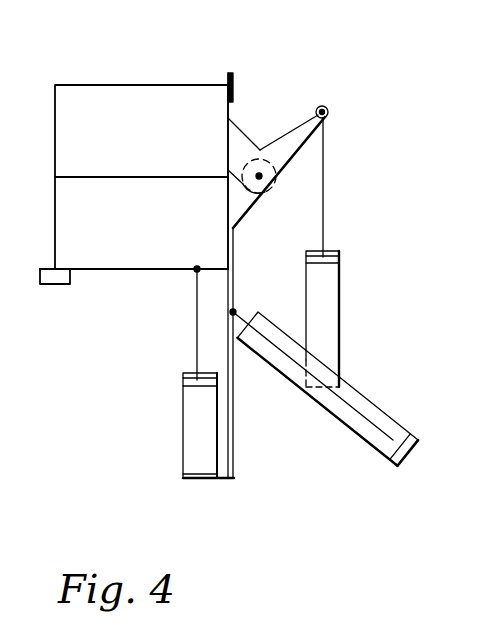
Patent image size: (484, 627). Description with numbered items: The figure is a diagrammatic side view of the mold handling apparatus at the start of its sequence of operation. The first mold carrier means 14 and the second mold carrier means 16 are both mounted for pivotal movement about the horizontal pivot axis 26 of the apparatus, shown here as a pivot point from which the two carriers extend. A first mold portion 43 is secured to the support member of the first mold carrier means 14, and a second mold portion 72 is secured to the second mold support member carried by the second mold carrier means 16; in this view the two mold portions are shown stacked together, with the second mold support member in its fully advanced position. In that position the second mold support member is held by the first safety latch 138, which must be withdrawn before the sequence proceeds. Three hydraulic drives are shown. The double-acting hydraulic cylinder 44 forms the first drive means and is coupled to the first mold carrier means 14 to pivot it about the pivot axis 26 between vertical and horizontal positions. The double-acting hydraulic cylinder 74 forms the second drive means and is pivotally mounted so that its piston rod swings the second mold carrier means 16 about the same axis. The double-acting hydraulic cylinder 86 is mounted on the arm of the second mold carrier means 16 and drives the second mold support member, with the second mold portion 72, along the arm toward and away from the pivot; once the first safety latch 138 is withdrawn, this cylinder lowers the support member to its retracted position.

The first mold carrier means 14 is at (246, 75).
The horizontal pivot axis 26 is at (259, 173).
The first mold portion 43 is at (155, 158).
The second mold portion 72 is at (155, 240).
The second mold carrier means 16 is at (180, 292).
The first safety latch 138 is at (62, 296).
The double-acting hydraulic cylinder 44 is at (330, 306).
The double-acting hydraulic cylinder 74 is at (350, 418).
The double-acting hydraulic cylinder 86 is at (196, 443).